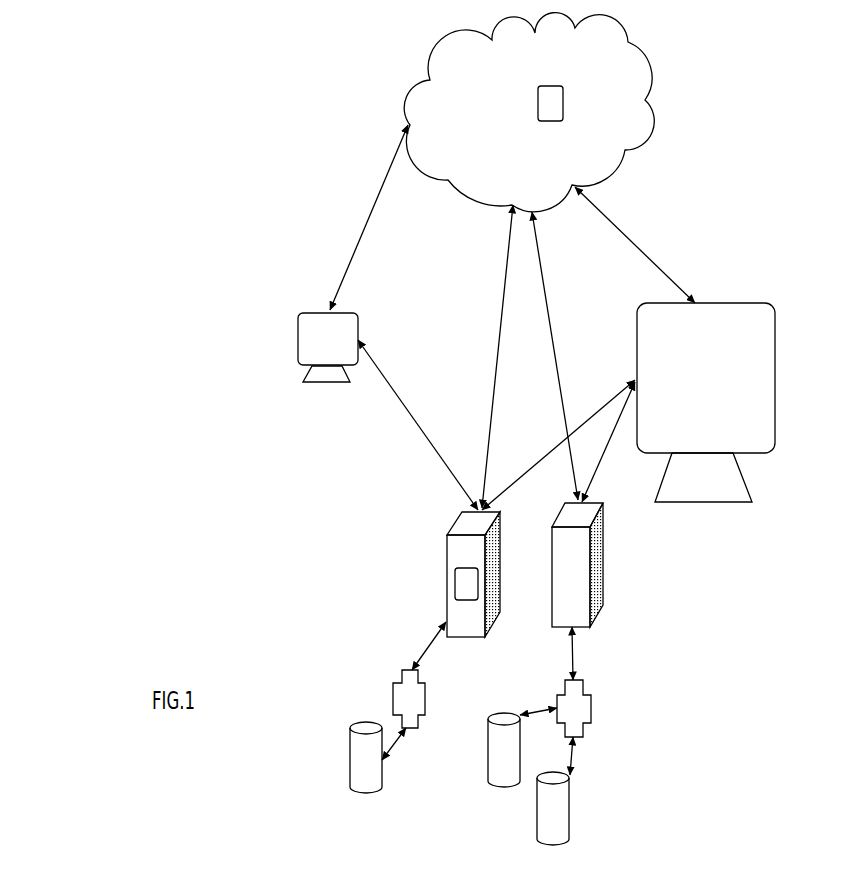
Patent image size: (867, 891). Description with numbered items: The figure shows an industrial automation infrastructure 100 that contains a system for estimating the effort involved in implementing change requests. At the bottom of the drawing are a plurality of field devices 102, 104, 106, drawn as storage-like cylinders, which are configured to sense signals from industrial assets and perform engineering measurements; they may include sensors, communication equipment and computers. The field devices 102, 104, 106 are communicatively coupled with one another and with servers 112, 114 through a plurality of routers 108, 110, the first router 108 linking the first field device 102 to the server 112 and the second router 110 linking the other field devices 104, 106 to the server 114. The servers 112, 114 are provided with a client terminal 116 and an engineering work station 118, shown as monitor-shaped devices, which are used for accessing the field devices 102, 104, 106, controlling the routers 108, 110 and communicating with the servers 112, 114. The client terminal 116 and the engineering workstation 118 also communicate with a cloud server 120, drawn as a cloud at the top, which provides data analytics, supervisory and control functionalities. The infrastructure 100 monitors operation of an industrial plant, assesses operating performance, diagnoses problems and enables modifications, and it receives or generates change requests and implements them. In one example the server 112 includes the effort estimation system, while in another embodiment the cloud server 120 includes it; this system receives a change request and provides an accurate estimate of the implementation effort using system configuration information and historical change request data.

The industrial automation infrastructure 100 is at (95, 25).
The field device 102 is at (350, 760).
The field device 104 is at (488, 775).
The field device 106 is at (538, 838).
The router 108 is at (400, 672).
The router 110 is at (562, 680).
The server 112 is at (445, 545).
The server 114 is at (562, 545).
The client terminal 116 is at (303, 303).
The engineering work station 118 is at (645, 310).
The cloud server 120 is at (432, 43).